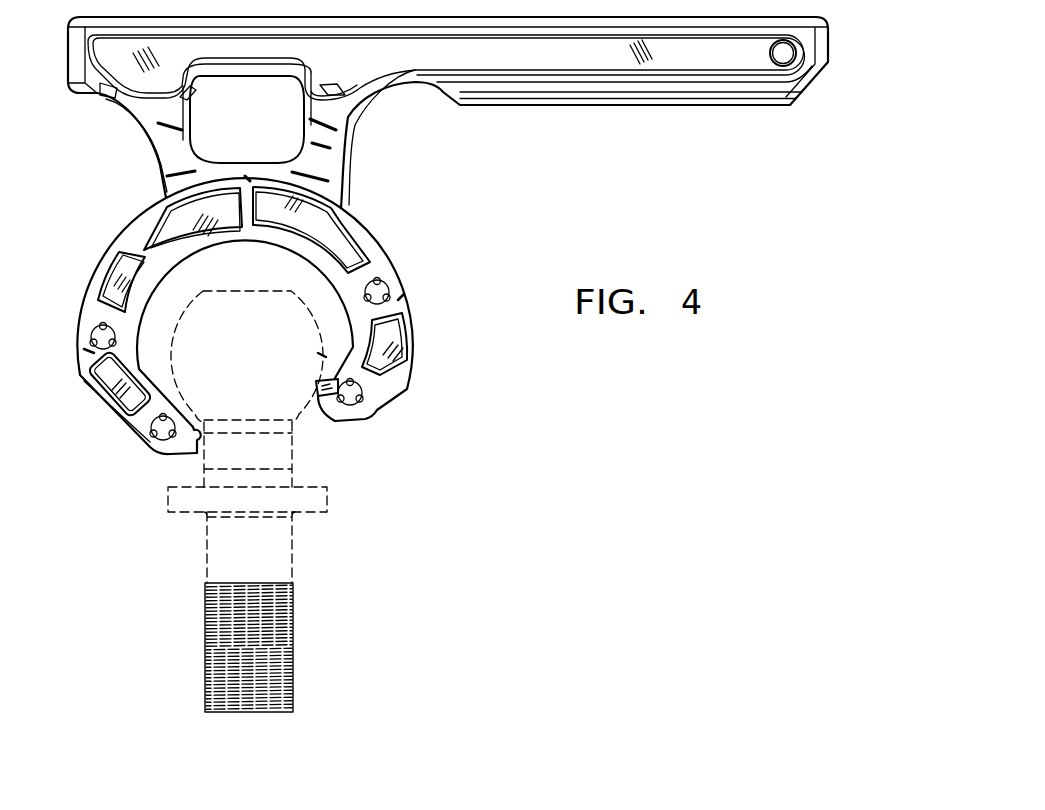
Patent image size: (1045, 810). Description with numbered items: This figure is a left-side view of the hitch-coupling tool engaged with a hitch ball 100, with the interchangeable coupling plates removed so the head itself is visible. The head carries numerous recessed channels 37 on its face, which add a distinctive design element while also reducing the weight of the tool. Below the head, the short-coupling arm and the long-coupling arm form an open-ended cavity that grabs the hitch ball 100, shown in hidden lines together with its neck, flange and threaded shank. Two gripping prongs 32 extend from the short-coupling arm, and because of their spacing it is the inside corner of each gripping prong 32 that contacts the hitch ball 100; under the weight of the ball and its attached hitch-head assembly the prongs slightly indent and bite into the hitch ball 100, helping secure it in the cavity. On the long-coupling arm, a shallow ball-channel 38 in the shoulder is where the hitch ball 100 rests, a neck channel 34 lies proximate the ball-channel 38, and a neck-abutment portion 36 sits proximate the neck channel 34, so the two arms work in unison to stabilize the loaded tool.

The gripping prong 32 is at (320, 398).
The neck channel 34 is at (212, 447).
The neck-abutment portion 36 is at (214, 448).
The recessed channel 37 is at (158, 228).
The ball-channel 38 is at (137, 427).
The hitch ball 100 is at (281, 320).